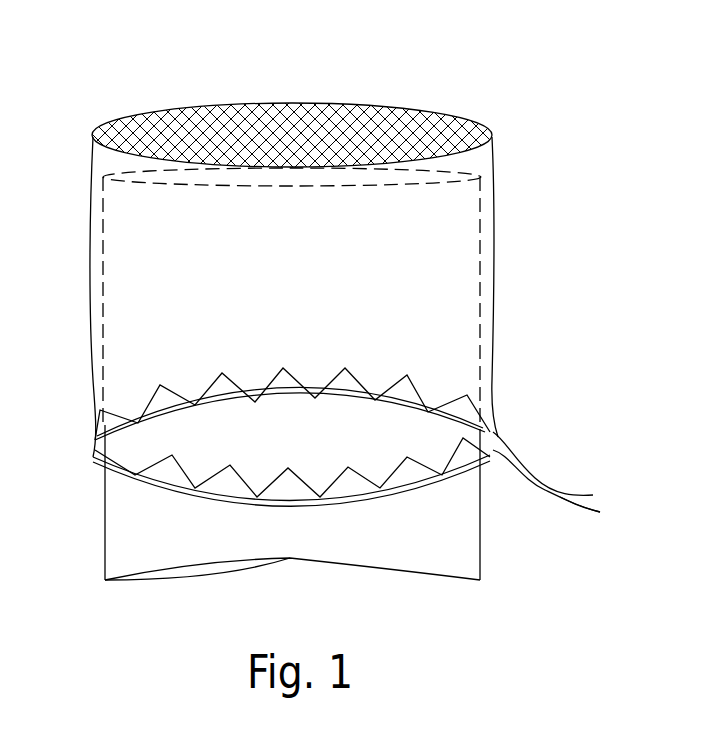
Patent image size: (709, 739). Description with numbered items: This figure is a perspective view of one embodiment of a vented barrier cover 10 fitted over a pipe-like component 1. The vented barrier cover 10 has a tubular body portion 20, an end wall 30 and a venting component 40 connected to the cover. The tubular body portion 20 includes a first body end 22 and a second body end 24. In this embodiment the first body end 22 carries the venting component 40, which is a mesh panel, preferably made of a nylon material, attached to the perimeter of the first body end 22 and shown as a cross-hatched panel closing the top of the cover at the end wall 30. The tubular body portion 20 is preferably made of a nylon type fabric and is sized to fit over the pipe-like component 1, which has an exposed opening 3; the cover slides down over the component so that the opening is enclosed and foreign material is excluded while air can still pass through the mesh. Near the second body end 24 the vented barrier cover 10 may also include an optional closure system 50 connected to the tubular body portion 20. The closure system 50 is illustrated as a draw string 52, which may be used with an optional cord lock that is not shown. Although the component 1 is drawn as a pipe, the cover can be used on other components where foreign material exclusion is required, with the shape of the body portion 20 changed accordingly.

The vented barrier cover 10 is at (88, 118).
The venting component 40 is at (275, 118).
The end wall 30 is at (425, 108).
The first body end 22 is at (497, 150).
The exposed opening 3 is at (385, 183).
The tubular body portion 20 is at (92, 280).
The second body end 24 is at (93, 453).
The pipe-like component 1 is at (105, 517).
The closure system 50 is at (513, 435).
The draw string 52 is at (555, 498).